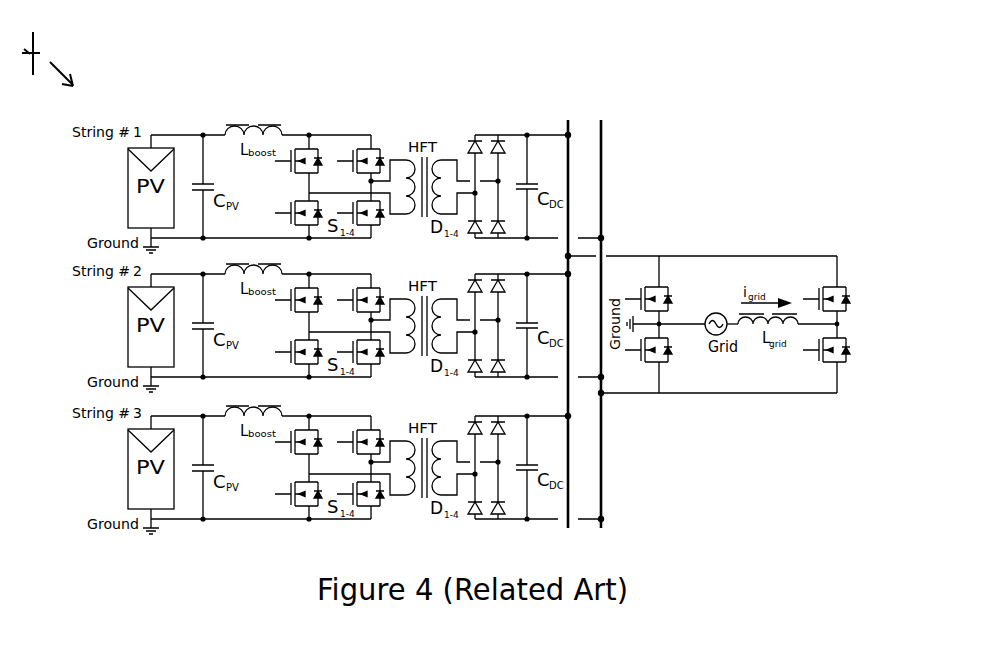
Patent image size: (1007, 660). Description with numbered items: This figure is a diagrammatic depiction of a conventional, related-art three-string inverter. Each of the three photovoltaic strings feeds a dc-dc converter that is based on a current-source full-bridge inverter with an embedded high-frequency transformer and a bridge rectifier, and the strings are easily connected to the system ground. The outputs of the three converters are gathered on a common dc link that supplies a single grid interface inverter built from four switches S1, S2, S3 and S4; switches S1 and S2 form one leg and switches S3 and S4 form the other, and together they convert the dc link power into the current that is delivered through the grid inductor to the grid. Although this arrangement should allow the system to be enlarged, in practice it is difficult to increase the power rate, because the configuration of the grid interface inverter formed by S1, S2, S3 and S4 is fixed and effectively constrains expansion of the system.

The inverter switch S1 is at (663, 300).
The inverter switch S2 is at (663, 351).
The inverter switch S3 is at (841, 300).
The inverter switch S4 is at (841, 352).